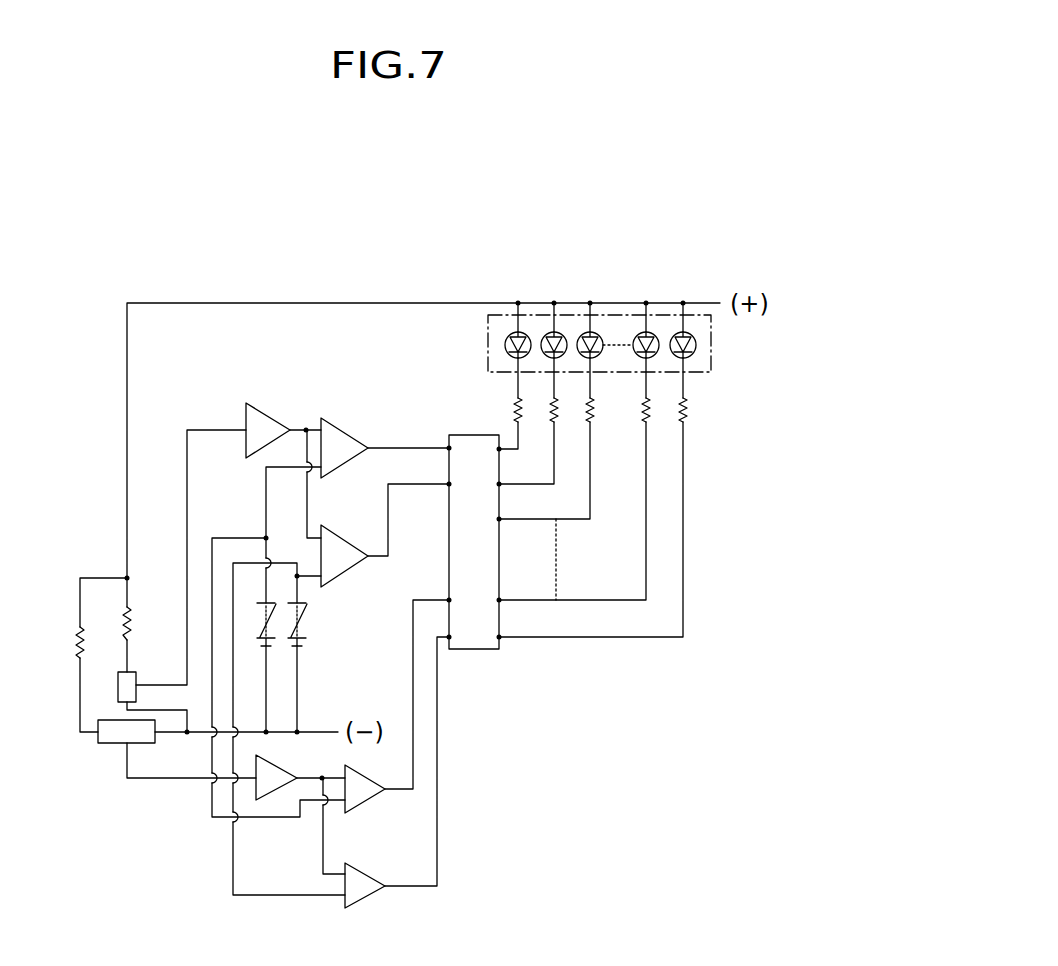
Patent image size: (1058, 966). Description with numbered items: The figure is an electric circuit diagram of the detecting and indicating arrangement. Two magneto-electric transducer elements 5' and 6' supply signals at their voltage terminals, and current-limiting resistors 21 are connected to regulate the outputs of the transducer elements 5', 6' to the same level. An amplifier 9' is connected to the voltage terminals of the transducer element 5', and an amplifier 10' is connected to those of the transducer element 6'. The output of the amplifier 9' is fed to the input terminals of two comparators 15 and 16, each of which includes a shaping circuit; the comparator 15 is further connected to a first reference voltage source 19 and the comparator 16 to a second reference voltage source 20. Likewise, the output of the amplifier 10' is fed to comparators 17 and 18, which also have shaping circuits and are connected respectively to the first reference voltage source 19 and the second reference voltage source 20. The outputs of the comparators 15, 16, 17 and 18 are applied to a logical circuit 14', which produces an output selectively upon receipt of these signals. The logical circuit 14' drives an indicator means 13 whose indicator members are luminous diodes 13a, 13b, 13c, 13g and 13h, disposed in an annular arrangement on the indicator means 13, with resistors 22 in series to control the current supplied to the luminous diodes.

The luminous diode 13a is at (508, 333).
The luminous diode 13b is at (548, 332).
The luminous diode 13c is at (583, 332).
The luminous diode 13g is at (637, 332).
The luminous diode 13h is at (695, 332).
The indicator means 13 is at (711, 358).
The resistor 22 is at (516, 398).
The logical circuit 14' is at (482, 568).
The amplifier 9' is at (268, 413).
The amplifier 10' is at (235, 804).
The comparator 15 is at (342, 442).
The comparator 16 is at (342, 553).
The comparator 17 is at (360, 798).
The comparator 18 is at (367, 890).
The first reference voltage source 19 is at (257, 622).
The second reference voltage source 20 is at (308, 624).
The current-limiting resistor 21 is at (120, 622).
The magneto-electric transducer element 5' is at (146, 675).
The magneto-electric transducer element 6' is at (118, 754).